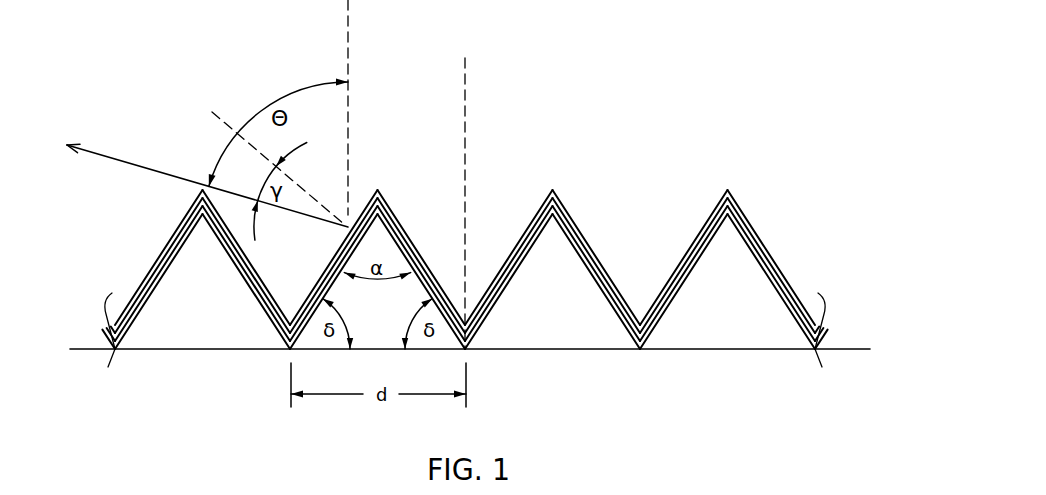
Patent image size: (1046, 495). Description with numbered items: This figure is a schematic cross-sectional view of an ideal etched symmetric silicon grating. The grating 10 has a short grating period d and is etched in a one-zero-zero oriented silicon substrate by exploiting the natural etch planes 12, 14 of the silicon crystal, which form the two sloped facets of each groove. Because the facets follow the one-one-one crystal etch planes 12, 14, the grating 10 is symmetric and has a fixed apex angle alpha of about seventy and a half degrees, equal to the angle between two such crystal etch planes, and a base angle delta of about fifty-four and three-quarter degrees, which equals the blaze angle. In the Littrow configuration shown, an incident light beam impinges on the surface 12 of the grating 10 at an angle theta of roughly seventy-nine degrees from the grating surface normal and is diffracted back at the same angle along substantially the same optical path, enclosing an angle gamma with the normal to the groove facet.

The grating 10 is at (619, 384).
The natural etch plane 12 is at (532, 223).
The natural etch plane 14 is at (588, 233).